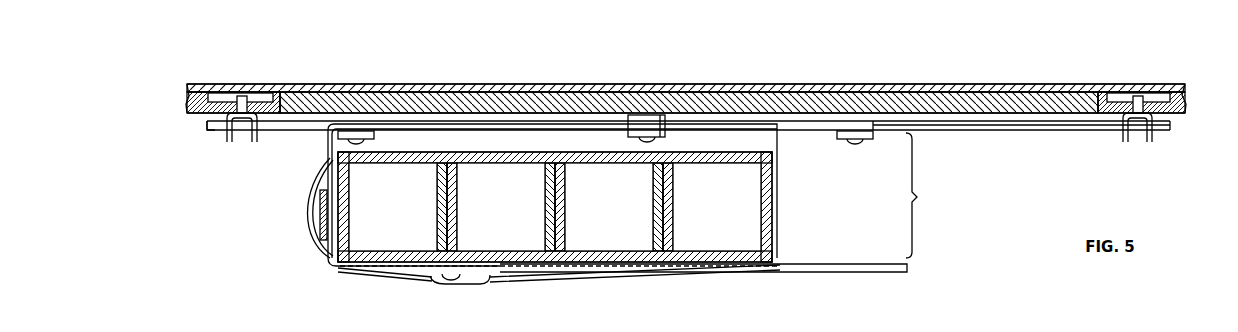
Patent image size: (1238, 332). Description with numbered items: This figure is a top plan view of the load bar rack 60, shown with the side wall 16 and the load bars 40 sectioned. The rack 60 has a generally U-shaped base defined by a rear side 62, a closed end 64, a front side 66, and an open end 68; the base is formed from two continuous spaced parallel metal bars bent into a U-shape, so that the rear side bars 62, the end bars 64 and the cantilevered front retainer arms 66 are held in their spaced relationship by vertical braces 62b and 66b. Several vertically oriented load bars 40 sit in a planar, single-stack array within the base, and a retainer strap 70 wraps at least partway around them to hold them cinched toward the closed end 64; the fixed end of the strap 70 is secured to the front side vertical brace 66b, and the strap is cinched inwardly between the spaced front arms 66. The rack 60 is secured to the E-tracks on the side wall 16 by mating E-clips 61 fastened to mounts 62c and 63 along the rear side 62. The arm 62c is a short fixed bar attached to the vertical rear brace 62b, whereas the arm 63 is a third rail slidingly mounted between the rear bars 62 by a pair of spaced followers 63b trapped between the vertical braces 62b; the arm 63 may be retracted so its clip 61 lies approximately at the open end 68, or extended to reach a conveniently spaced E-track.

The side wall 16 is at (812, 102).
The load bar 40 is at (392, 160).
The rack 60 is at (328, 306).
The E-clip 61 is at (250, 142).
The rear side 62 is at (548, 128).
The vertical rear brace 62b is at (343, 131).
The mount (fixed arm) 62c is at (212, 124).
The mount (movable arm) 63 is at (920, 127).
The follower 63b is at (660, 118).
The closed end 64 is at (327, 160).
The front side (retainer arm) 66 is at (845, 267).
The front side vertical brace 66b is at (447, 282).
The open end 68 is at (926, 195).
The retainer strap 70 is at (437, 152).